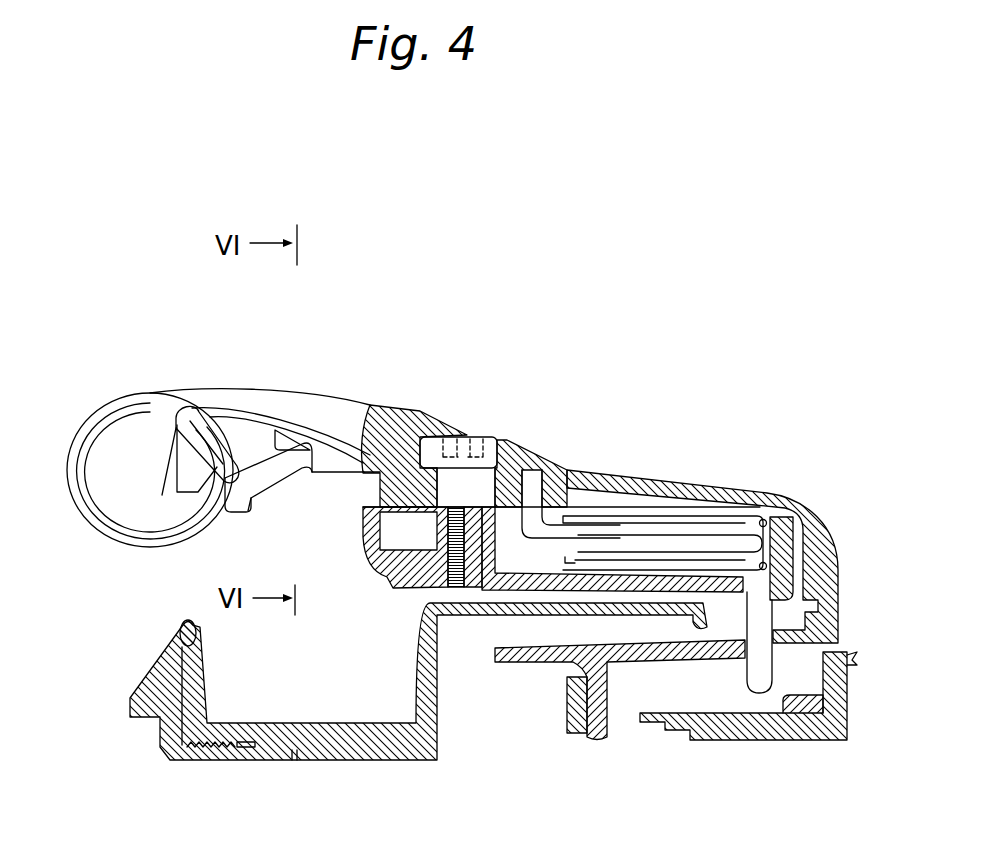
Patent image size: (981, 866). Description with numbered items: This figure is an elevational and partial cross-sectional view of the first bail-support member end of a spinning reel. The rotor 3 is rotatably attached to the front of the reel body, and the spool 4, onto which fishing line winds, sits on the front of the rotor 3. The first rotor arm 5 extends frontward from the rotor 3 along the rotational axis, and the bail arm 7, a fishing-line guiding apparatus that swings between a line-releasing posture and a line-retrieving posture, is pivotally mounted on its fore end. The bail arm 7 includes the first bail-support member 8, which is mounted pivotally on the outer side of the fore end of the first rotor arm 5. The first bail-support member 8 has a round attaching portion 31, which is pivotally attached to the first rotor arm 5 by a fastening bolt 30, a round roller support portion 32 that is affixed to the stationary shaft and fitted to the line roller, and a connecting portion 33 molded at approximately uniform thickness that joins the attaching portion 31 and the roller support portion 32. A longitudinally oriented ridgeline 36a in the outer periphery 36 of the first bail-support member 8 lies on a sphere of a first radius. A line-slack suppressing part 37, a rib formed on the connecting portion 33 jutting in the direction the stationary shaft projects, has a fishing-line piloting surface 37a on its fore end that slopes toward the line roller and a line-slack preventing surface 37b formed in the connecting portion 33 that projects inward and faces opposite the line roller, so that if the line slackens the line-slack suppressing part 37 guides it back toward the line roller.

The rotor 3 is at (530, 667).
The spool 4 is at (318, 717).
The first rotor arm 5 is at (647, 587).
The bail arm 7 is at (150, 570).
The first bail-support member 8 is at (325, 415).
The fastening bolt 30 is at (492, 435).
The round attaching portion 31 is at (553, 466).
The round roller support portion 32 is at (107, 387).
The connecting portion 33 is at (245, 400).
The outer periphery 36 is at (290, 400).
The ridgeline 36a is at (385, 400).
The line-slack suppressing part 37 is at (300, 480).
The fishing-line piloting surface 37a is at (270, 498).
The line-slack preventing surface 37b is at (170, 493).